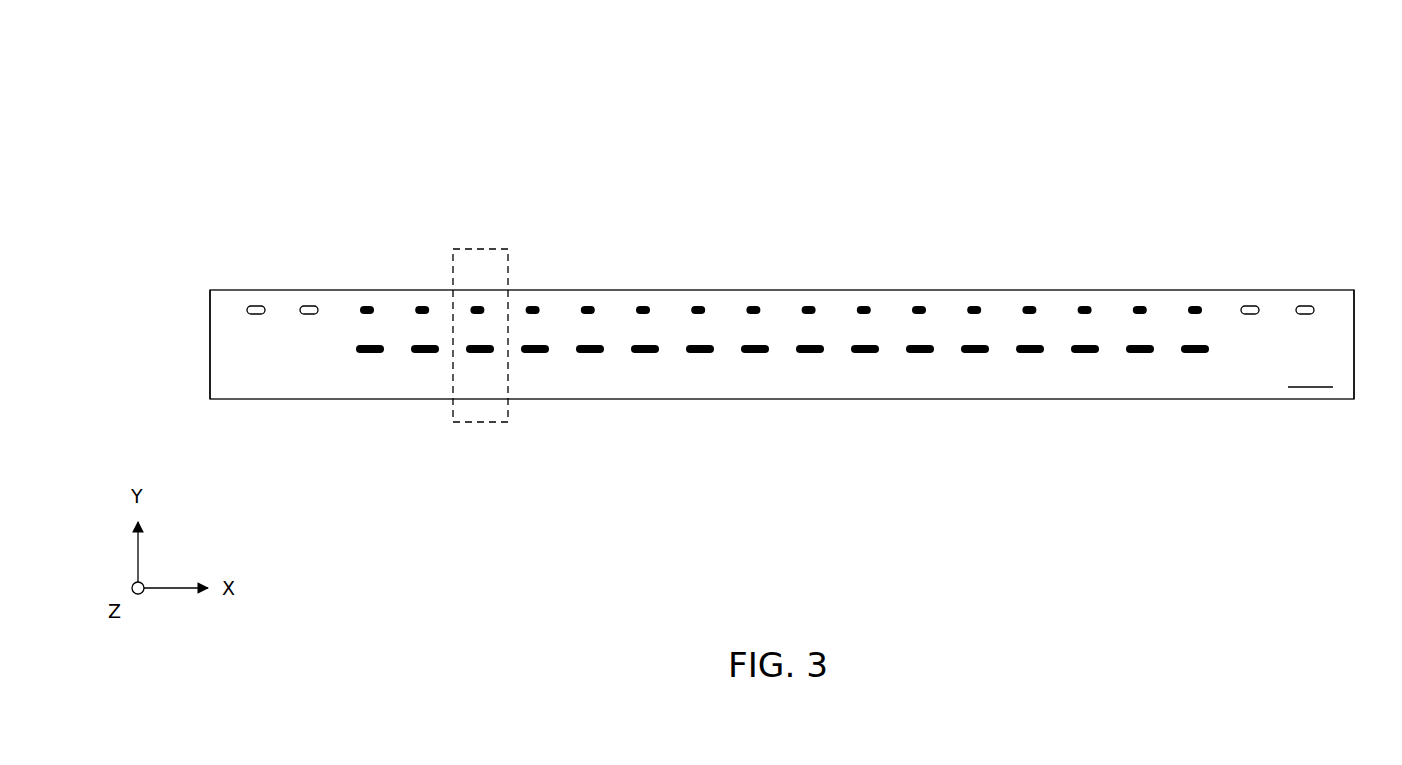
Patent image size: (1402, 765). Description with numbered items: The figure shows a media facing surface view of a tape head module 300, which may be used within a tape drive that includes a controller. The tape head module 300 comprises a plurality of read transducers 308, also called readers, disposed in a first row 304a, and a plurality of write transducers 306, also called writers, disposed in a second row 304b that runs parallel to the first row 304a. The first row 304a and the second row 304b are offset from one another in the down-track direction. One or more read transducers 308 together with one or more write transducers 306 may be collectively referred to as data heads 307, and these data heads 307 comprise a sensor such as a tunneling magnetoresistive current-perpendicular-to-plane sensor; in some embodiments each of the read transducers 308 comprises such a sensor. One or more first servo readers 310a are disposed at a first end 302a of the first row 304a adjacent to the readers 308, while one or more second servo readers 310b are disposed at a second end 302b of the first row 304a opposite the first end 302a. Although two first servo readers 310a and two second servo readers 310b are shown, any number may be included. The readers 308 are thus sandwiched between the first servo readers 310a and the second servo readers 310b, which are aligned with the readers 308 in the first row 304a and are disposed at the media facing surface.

The tape head module 300 is at (172, 115).
The first end 302a is at (212, 272).
The second end 302b is at (1342, 270).
The first row 304a is at (188, 312).
The second row 304b is at (333, 347).
The write transducers 306 is at (603, 352).
The data heads 307 is at (505, 249).
The read transducers 308 is at (760, 308).
The first servo readers 310a is at (256, 306).
The second servo readers 310b is at (1306, 306).